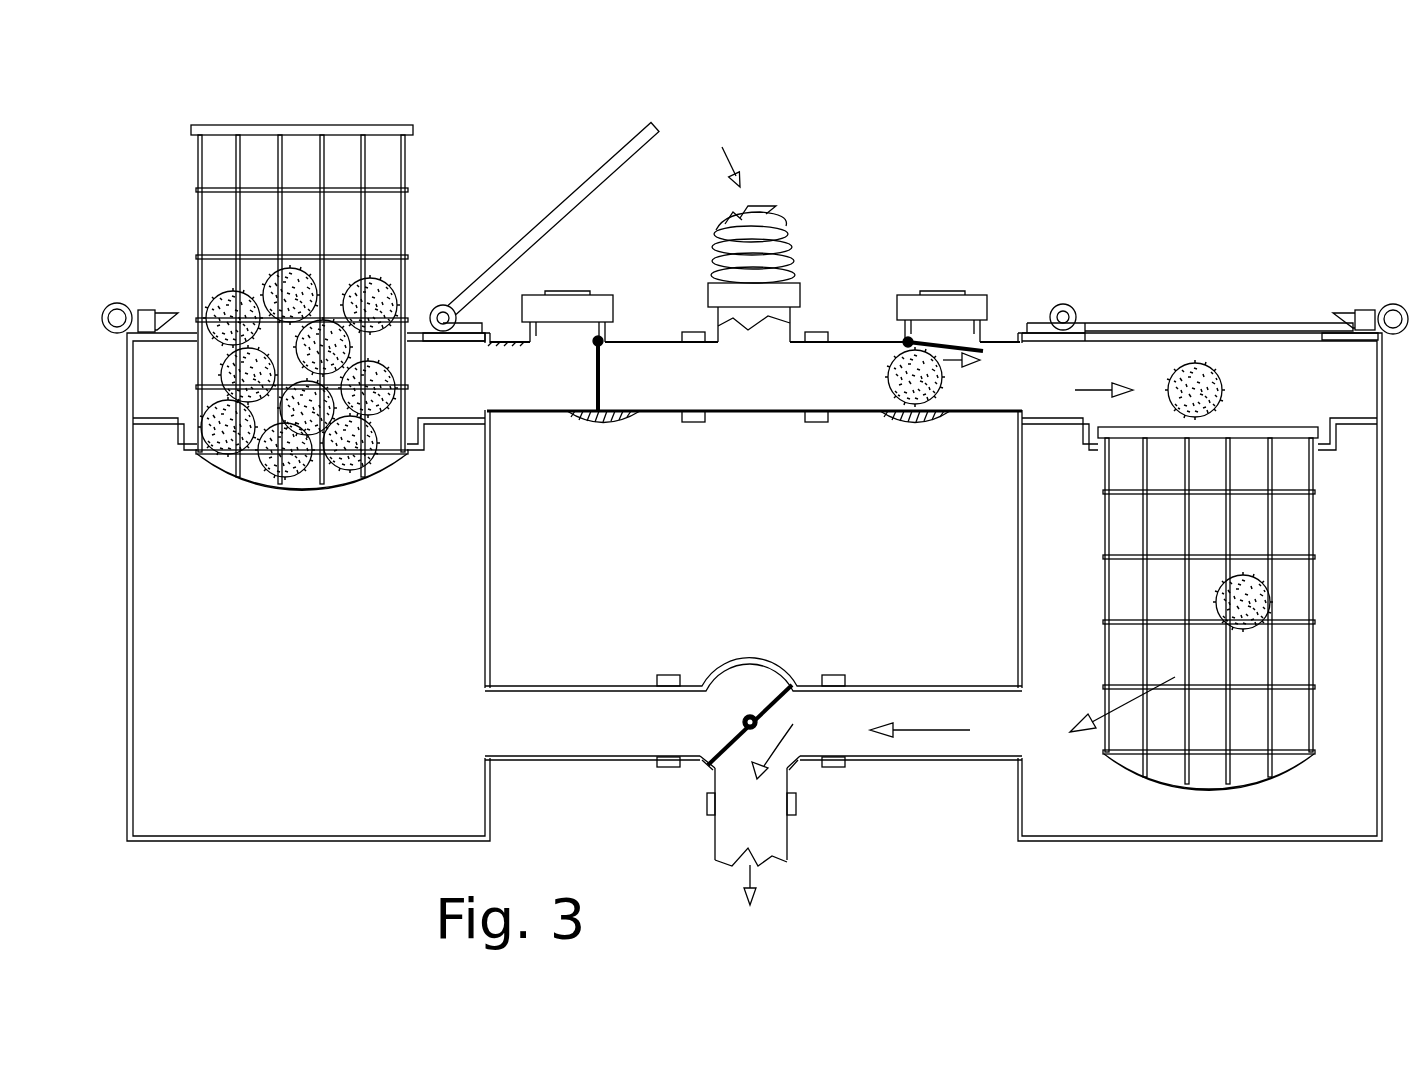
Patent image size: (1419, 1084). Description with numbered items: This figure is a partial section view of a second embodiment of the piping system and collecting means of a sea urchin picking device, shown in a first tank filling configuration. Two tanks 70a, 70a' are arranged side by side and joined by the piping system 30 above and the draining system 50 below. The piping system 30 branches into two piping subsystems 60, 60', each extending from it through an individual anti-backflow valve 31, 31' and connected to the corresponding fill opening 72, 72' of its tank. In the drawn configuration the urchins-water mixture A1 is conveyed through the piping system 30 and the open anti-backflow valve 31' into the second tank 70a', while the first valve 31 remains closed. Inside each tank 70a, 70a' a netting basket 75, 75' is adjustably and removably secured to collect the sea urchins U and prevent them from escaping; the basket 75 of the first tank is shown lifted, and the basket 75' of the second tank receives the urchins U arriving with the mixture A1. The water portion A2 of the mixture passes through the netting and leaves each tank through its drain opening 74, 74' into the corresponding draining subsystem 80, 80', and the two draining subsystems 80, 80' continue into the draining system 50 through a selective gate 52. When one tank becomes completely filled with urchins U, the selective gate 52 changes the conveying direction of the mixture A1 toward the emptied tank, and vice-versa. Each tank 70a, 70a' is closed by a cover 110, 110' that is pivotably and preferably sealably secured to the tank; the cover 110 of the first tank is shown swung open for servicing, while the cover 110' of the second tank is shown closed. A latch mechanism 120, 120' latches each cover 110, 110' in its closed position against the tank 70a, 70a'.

The piping system 30 is at (783, 233).
The anti-backflow valve 31 is at (600, 421).
The anti-backflow valve 31' is at (920, 324).
The draining system 50 is at (790, 843).
The selective gate 52 is at (770, 690).
The piping subsystem 60 is at (555, 287).
The piping subsystem 60' is at (989, 288).
The tank 70a is at (620, 550).
The tank 70a' is at (886, 550).
The fill opening 72 is at (603, 443).
The fill opening 72' is at (907, 409).
The drain opening 74 is at (308, 587).
The drain opening 74' is at (1200, 587).
The netting basket 75 is at (271, 307).
The netting basket 75' is at (1115, 608).
The draining subsystem 80 is at (600, 760).
The draining subsystem 80' is at (904, 764).
The cover 110 is at (541, 232).
The cover 110' is at (1198, 287).
The latch mechanism 120 is at (143, 270).
The latch mechanism 120' is at (1350, 267).
The sea urchins U is at (212, 308).
The urchins-water mixture A1 is at (927, 269).
The water A2 is at (925, 798).